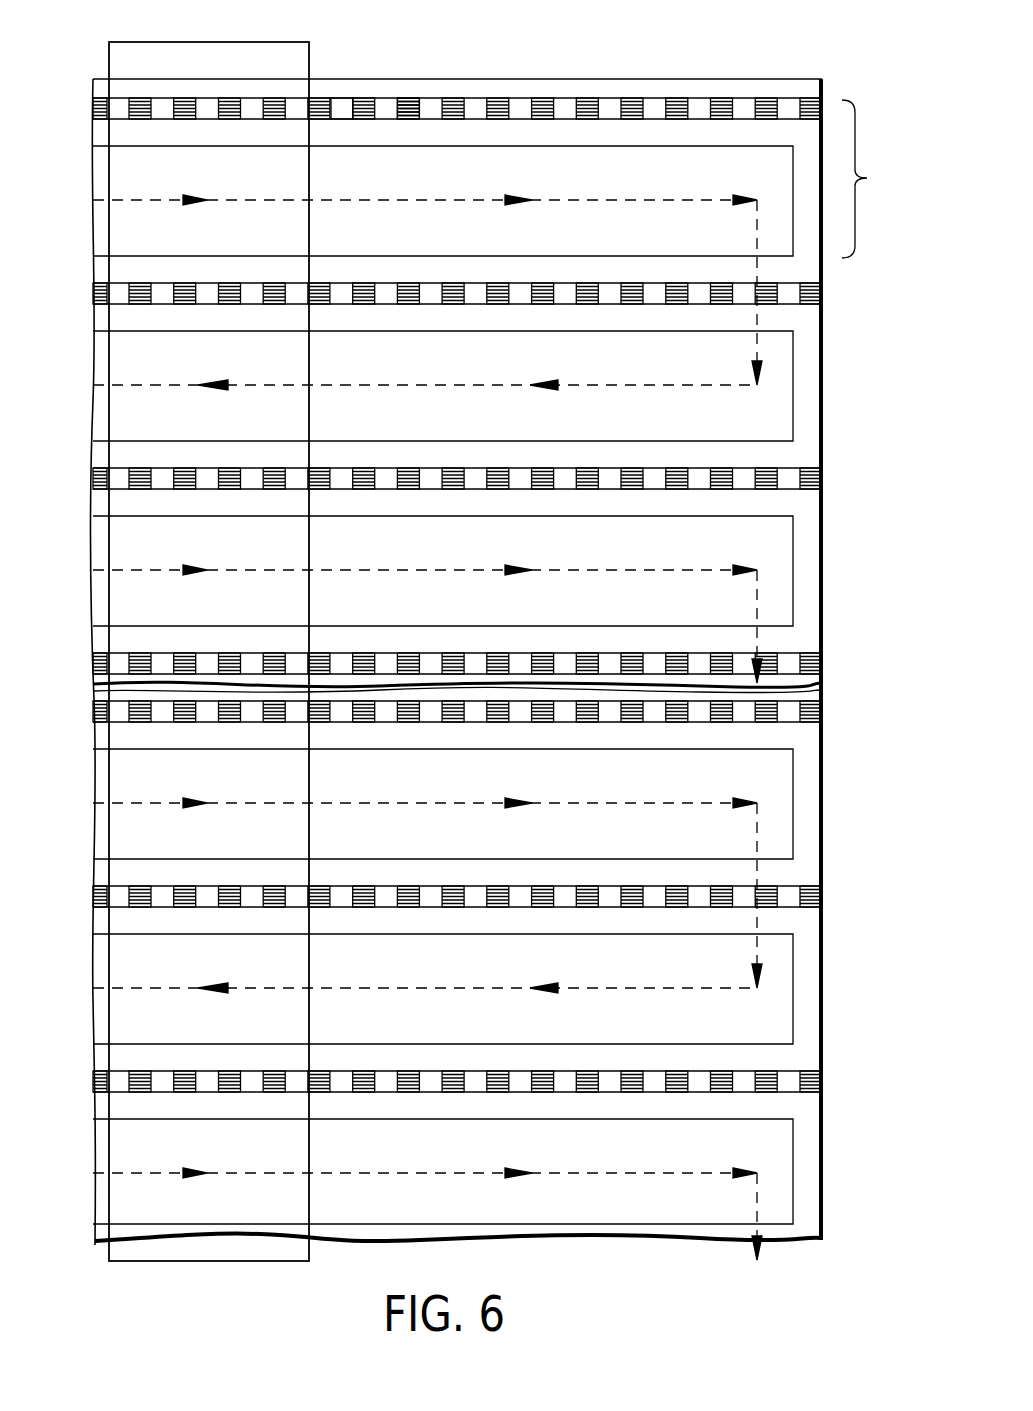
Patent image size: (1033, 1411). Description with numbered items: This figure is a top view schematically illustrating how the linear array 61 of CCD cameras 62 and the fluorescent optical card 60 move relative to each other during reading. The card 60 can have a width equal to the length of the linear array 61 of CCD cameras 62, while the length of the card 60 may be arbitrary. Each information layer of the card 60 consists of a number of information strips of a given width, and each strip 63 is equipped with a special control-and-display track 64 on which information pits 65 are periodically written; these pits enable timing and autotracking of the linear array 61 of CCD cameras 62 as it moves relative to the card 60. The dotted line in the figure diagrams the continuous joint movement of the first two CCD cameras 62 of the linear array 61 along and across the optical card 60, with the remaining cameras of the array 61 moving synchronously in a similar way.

The card 60 is at (760, 50).
The linear array 61 is at (322, 28).
The CCD cameras 62 is at (108, 214).
The strip 63 is at (898, 191).
The C&D track 64 is at (343, 100).
The information pits 65 is at (413, 100).